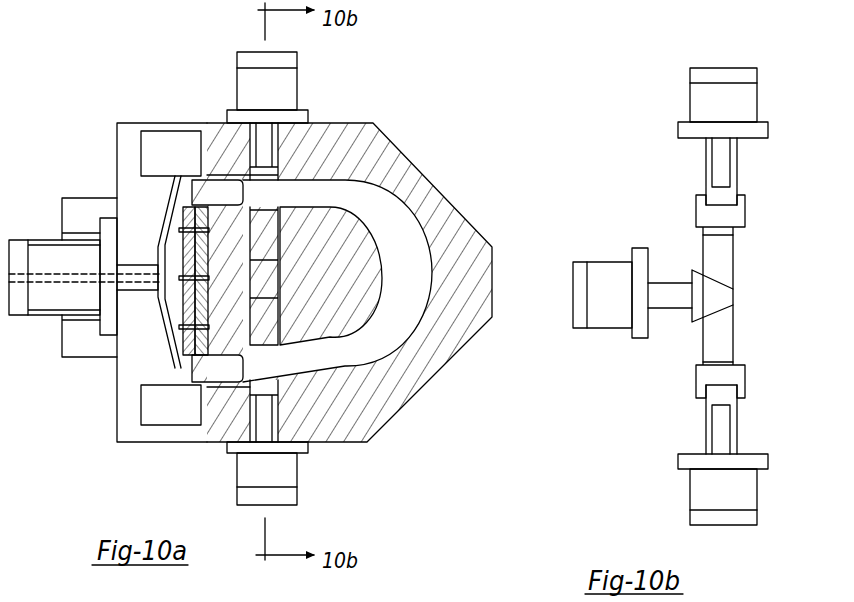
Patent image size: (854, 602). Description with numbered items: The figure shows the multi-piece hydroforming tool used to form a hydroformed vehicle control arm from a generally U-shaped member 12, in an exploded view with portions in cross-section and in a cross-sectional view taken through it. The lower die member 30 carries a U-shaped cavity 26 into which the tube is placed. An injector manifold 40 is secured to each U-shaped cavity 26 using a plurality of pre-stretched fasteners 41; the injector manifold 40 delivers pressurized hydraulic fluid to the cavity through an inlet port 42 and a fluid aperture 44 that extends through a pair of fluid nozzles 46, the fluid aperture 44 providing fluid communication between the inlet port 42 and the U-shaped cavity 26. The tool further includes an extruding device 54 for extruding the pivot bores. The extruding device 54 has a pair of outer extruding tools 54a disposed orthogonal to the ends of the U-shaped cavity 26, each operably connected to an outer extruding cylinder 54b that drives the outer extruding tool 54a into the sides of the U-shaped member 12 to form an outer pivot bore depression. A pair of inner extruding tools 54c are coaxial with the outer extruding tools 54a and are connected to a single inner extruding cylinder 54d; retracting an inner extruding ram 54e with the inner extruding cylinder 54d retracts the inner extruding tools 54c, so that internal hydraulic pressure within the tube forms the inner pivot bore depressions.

In FIG. 10B, the U-shaped member 12 is at (745, 210).
In FIG. 10A, the U-shaped cavity 26 is at (406, 253).
In FIG. 10A, the lower die member 30 is at (387, 137).
In FIG. 10A, the injector manifold 40 is at (85, 170).
In FIG. 10A, the pre-stretched fasteners 41 is at (175, 330).
In FIG. 10A, the inlet port 42 is at (32, 240).
In FIG. 10A, the fluid aperture 44 is at (53, 283).
In FIG. 10A, the fluid nozzles 46 is at (209, 179).
In FIG. 10B, the extruding device 54 is at (592, 194).
In FIG. 10B, the outer extruding tools 54a is at (706, 162).
In FIG. 10A, the outer extruding cylinder 54b is at (237, 62).
In FIG. 10B, the outer extruding cylinder 54b is at (690, 108).
In FIG. 10B, the inner extruding tools 54c is at (733, 259).
In FIG. 10B, the inner extruding cylinder 54d is at (597, 329).
In FIG. 10B, the inner extruding ram 54e is at (694, 323).